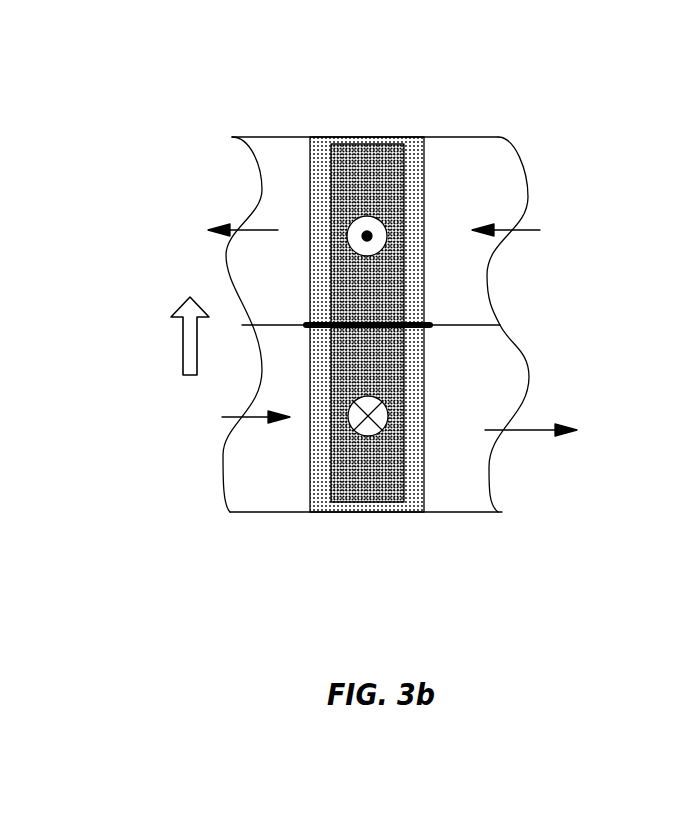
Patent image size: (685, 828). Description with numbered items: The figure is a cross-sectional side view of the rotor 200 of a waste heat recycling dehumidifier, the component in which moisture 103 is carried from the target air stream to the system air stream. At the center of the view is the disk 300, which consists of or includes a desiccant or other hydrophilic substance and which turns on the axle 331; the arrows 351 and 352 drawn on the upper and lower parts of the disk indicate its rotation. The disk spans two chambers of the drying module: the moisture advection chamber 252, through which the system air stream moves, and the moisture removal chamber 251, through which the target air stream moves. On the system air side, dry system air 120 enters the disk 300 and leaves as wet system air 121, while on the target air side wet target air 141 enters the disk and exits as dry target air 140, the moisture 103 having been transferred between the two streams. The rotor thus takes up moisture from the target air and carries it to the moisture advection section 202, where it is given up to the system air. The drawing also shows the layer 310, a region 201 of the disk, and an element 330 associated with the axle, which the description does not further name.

The moisture 103 is at (142, 336).
The dry system air 120 is at (555, 245).
The wet system air 121 is at (213, 244).
The dry target air 140 is at (558, 447).
The wet target air 141 is at (207, 433).
The rotor 200 is at (293, 376).
The lower channel portion 201 is at (411, 444).
The moisture advection section 202 is at (420, 188).
The moisture removal chamber 251 is at (350, 349).
The moisture advection chamber 252 is at (325, 306).
The disk 300 is at (396, 377).
The porous layer 310 is at (339, 293).
The membrane 330 is at (437, 302).
The axle 331 is at (336, 302).
The rotation arrow 351 is at (423, 217).
The rotation arrow 352 is at (412, 397).